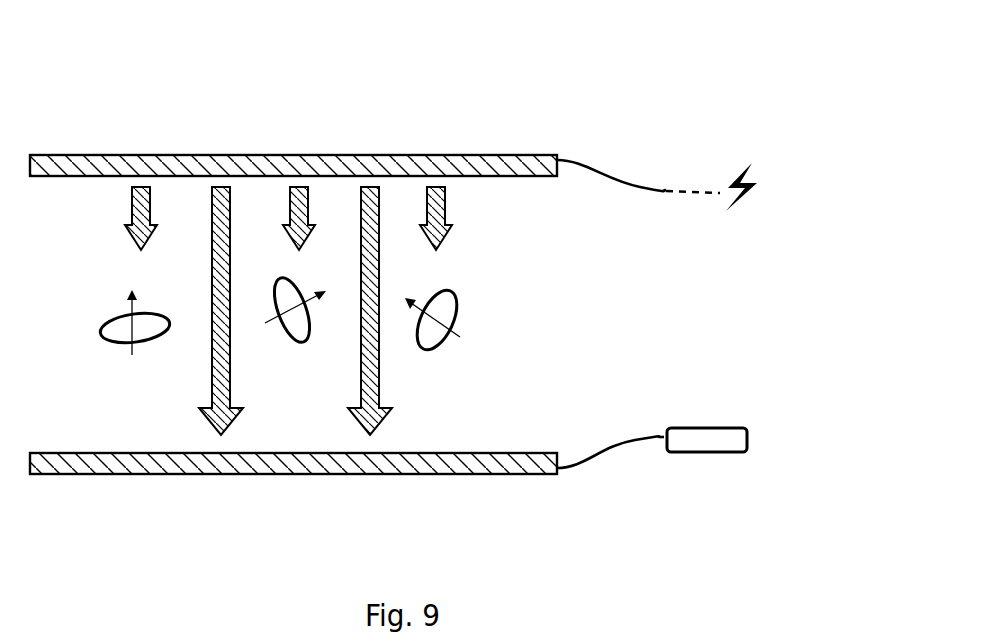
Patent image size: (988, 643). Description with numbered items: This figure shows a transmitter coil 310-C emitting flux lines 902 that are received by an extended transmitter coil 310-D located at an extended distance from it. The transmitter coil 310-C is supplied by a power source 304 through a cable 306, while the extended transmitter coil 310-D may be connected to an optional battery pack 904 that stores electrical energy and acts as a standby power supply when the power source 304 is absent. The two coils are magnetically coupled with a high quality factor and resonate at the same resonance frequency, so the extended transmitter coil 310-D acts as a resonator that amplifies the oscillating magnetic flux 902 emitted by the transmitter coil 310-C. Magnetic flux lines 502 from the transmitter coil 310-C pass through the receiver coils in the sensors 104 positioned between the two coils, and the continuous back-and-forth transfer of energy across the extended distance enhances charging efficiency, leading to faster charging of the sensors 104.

The sensors 104 is at (423, 335).
The power source 304 is at (754, 188).
The cable 306 is at (636, 186).
The transmitter coil 310-C is at (497, 155).
The extended transmitter coil 310-D is at (522, 462).
The magnetic flux lines 502 is at (422, 180).
The flux lines 902 is at (367, 428).
The battery pack 904 is at (708, 440).